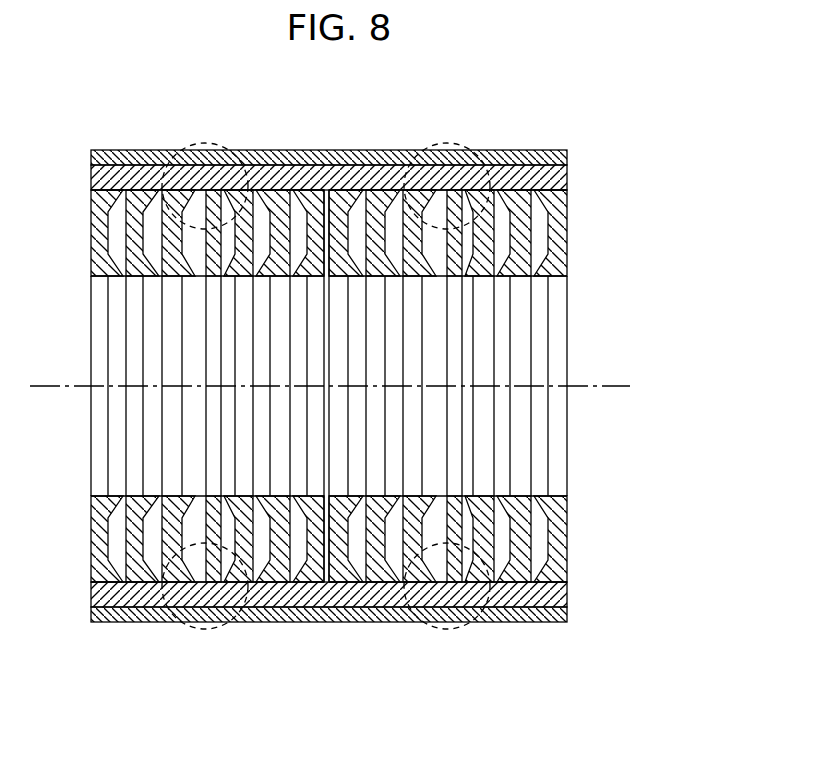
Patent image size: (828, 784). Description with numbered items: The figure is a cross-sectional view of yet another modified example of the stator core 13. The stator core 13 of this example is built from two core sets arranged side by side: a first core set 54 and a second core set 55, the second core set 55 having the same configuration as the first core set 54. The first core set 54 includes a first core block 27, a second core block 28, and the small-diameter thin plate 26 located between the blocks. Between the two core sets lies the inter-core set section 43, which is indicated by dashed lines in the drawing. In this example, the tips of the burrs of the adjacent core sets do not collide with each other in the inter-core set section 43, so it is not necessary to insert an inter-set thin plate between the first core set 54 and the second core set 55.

The stator core 13 is at (646, 132).
The small-diameter thin plate 26 is at (202, 196).
The first core block 27 is at (90, 138).
The second core block 28 is at (217, 138).
The inter-core set section 43 is at (482, 386).
The first core set 54 is at (327, 633).
The second core set 55 is at (567, 633).